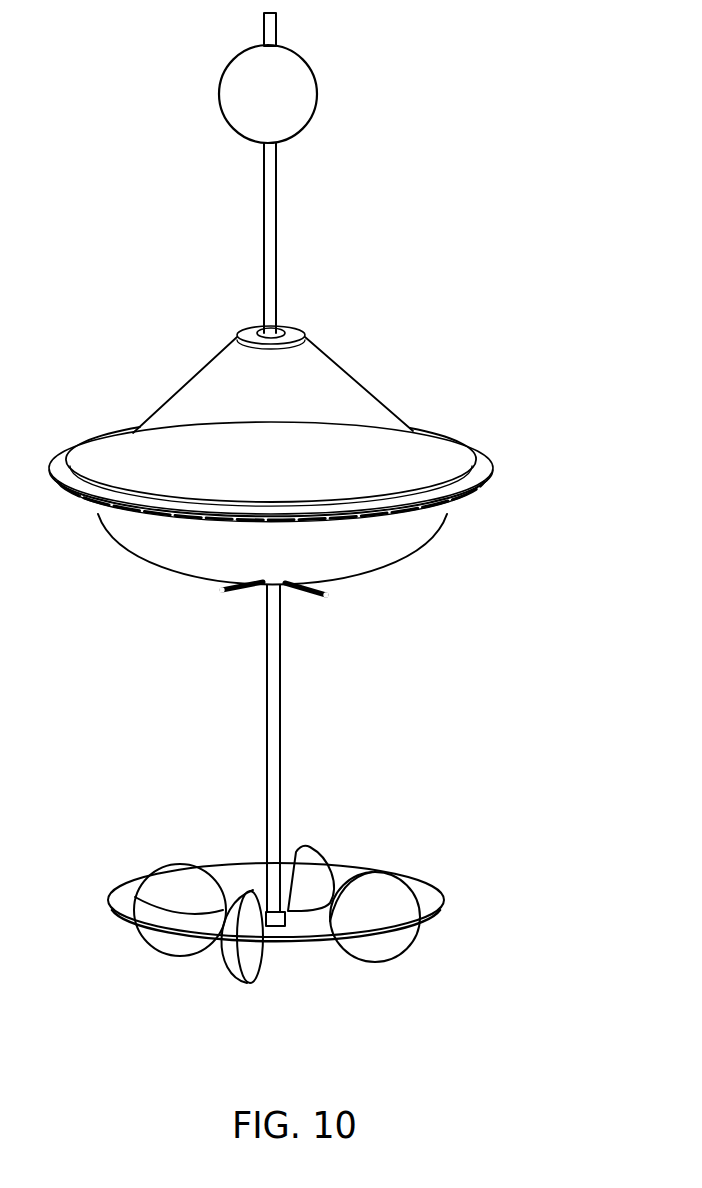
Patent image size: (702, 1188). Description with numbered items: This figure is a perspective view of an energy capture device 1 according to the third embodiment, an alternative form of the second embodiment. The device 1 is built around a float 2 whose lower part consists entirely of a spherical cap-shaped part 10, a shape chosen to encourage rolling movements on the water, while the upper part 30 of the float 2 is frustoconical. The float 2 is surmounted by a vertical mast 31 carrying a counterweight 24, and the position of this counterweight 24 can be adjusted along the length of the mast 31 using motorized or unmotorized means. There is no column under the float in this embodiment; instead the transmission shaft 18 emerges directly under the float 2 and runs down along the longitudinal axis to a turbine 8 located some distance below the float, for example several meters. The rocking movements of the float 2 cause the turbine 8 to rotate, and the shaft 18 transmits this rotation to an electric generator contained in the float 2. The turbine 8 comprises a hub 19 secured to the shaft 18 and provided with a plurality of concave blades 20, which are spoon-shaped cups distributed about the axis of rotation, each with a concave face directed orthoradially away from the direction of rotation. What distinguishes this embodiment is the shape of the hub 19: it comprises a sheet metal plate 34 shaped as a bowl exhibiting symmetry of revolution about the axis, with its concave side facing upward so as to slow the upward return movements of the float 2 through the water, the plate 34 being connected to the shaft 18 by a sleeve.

The energy capture device 1 is at (420, 228).
The float 2 is at (500, 347).
The turbine 8 is at (462, 828).
The spherical cap-shaped part 10 is at (415, 517).
The transmission shaft 18 is at (277, 683).
The hub 19 is at (303, 953).
The concave blades 20 is at (240, 872).
The counterweight 24 is at (247, 83).
The upper part 30 is at (207, 397).
The vertical mast 31 is at (268, 226).
The sheet metal plate 34 is at (127, 892).